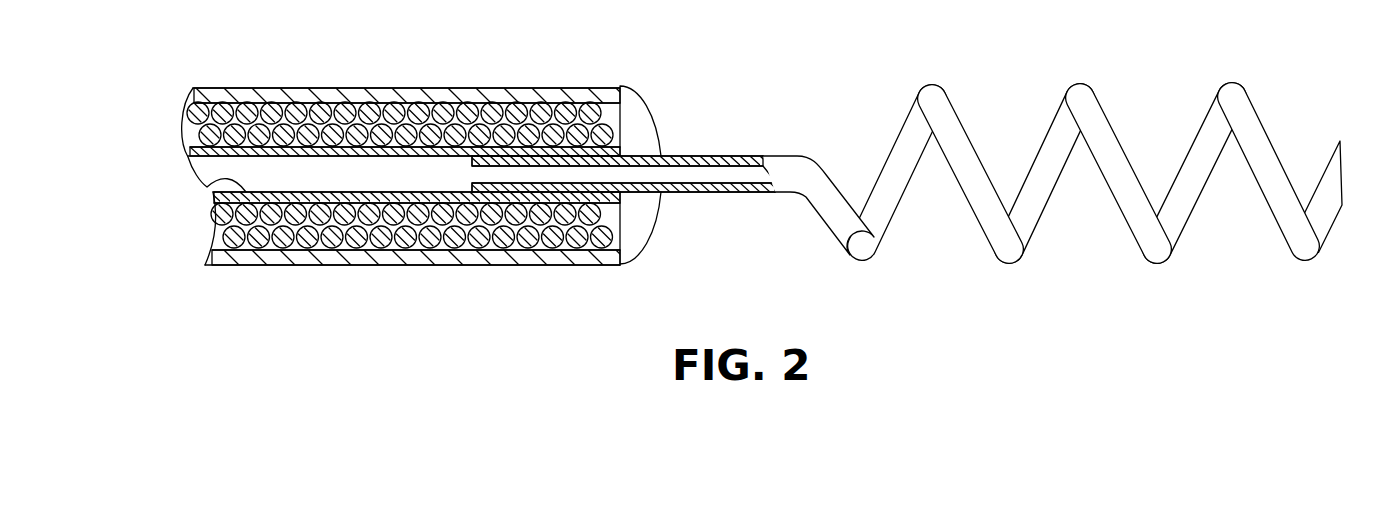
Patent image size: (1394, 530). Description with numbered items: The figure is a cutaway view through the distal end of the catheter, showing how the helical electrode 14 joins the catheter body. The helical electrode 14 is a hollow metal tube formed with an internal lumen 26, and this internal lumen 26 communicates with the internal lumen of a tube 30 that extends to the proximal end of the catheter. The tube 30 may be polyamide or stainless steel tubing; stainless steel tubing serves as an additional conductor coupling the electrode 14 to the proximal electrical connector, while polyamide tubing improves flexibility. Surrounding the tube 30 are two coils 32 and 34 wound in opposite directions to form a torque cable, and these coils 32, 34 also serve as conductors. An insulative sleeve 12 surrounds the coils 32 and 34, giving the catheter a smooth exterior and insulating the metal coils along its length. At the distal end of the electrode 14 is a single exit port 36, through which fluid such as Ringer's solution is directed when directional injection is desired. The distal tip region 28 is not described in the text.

The insulative sleeve 12 is at (440, 96).
The helical electrode 14 is at (1061, 152).
The internal lumen 26 is at (714, 154).
The distal tip dome 28 is at (636, 121).
The tube 30 is at (207, 187).
The coil 32 is at (280, 243).
The coil 34 is at (212, 252).
The exit port 36 is at (1345, 160).